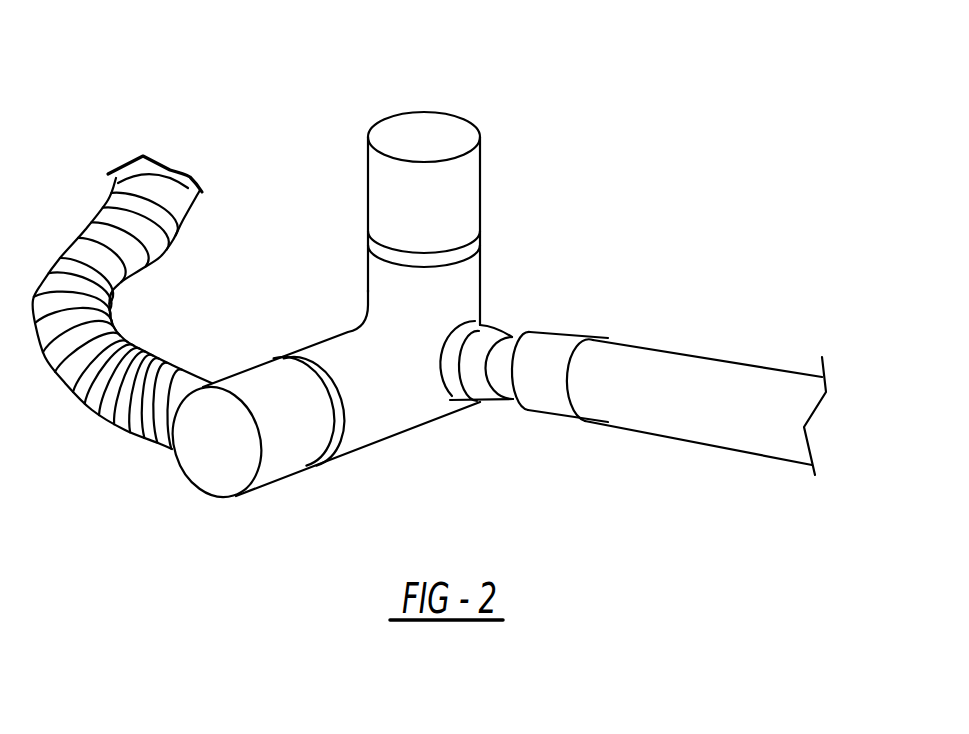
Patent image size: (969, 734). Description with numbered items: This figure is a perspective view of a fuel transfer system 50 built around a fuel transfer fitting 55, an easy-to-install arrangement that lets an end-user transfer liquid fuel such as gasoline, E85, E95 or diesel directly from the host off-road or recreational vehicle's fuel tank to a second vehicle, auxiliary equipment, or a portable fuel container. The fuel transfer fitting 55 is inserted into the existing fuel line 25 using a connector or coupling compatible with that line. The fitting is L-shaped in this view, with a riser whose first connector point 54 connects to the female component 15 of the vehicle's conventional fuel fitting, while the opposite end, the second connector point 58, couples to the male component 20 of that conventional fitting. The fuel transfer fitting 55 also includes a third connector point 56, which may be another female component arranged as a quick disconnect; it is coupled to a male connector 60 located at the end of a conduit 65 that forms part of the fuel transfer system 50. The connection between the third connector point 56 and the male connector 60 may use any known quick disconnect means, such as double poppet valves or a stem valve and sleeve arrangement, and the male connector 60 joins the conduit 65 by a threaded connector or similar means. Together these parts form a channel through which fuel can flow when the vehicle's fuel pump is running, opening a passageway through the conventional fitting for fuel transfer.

The fuel transfer system 50 is at (302, 115).
The fuel line 25 is at (107, 227).
The male component 20 is at (217, 455).
The fuel transfer fitting 55 is at (390, 393).
The second connector point 58 is at (340, 350).
The female component 15 is at (458, 180).
The first connector point 54 is at (456, 273).
The third connector point 56 is at (452, 372).
The male connector 60 is at (548, 345).
The conduit 65 is at (737, 428).